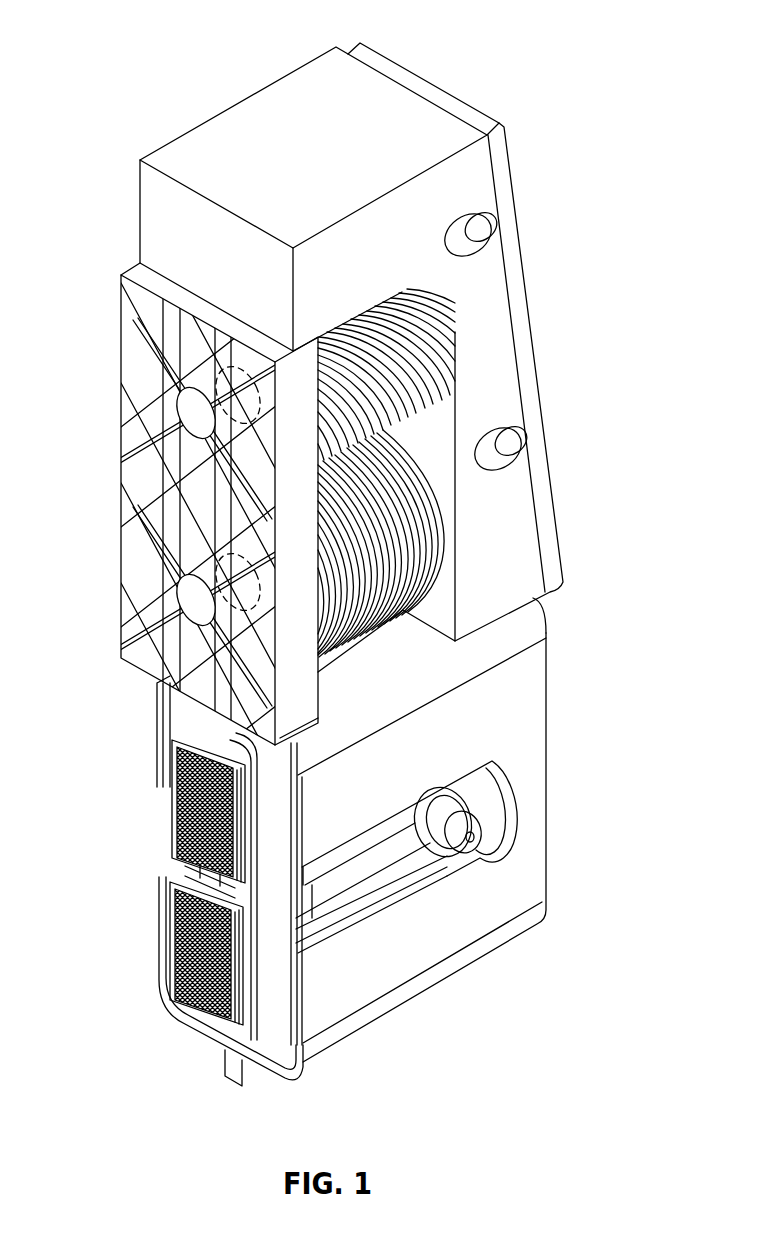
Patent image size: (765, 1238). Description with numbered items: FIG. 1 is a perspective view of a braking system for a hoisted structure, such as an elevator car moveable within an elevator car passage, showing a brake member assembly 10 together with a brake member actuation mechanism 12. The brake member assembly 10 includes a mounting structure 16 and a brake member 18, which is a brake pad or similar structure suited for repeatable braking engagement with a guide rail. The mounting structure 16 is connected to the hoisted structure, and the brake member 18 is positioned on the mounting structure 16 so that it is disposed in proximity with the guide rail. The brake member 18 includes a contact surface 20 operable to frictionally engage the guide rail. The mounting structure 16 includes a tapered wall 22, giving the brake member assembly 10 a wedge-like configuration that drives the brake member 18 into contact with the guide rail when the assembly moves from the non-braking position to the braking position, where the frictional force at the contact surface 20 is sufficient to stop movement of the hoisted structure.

The brake member assembly 10 is at (538, 132).
The brake member actuation mechanism 12 is at (586, 775).
The mounting structure 16 is at (152, 222).
The brake member 18 is at (112, 333).
The contact surface 20 is at (130, 484).
The tapered wall 22 is at (533, 350).